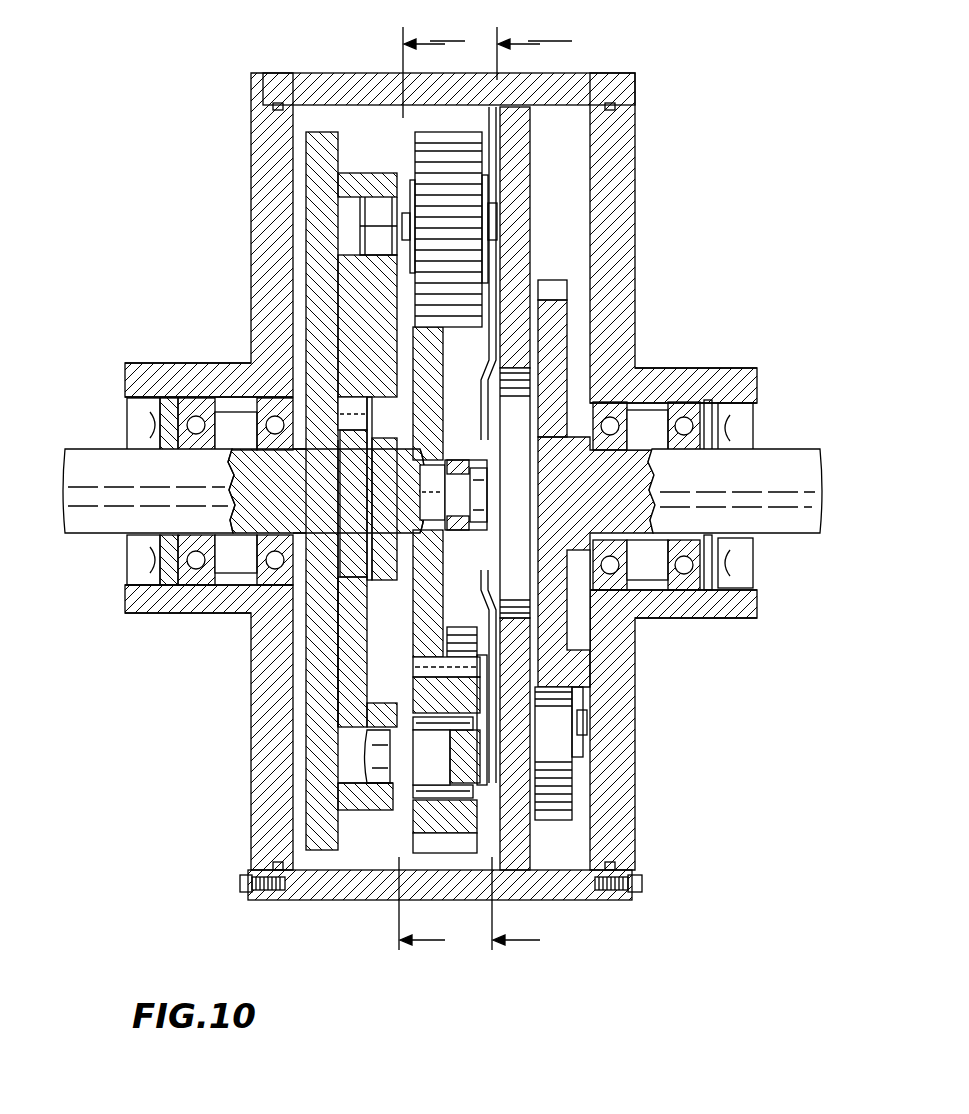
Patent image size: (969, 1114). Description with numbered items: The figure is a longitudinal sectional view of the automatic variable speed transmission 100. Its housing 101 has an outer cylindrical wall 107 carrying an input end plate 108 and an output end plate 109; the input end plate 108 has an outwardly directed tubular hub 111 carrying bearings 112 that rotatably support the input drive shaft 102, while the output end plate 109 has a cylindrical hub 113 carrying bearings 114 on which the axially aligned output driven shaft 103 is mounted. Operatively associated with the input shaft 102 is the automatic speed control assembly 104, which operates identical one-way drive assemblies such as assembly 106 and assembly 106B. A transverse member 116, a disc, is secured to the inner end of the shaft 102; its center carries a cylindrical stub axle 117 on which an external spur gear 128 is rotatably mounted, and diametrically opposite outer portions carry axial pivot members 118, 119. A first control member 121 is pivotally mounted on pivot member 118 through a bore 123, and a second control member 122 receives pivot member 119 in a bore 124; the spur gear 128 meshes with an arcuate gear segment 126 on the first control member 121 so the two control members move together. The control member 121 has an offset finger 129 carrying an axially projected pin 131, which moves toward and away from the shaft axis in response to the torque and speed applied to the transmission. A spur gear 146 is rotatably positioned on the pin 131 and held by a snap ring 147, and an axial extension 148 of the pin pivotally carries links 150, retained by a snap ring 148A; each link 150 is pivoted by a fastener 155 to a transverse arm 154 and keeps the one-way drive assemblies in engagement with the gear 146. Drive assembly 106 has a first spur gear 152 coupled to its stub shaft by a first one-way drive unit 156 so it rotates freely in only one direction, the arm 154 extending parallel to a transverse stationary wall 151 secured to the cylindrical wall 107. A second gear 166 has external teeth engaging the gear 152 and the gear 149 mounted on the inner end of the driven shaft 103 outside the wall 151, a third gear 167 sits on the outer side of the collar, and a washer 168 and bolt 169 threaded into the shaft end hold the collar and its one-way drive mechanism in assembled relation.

The automatic variable speed transmission 100 is at (454, 494).
The housing 101 is at (441, 461).
The input drive shaft 102 is at (105, 455).
The output driven shaft 103 is at (790, 465).
The automatic speed control assembly 104 is at (370, 125).
The one-way drive assembly 106 is at (440, 853).
The one-way drive assembly 106B is at (470, 130).
The outer cylindrical wall 107 is at (318, 74).
The input end plate 108 is at (258, 770).
The output end plate 109 is at (615, 250).
The tubular hub 111 is at (190, 372).
The bearings 112 is at (273, 447).
The cylindrical hub 113 is at (673, 370).
The bearings 114 is at (680, 537).
The transverse member 116 is at (330, 268).
The cylindrical stub axle 117 is at (247, 618).
The pivot member 118 is at (353, 763).
The pivot member 119 is at (355, 222).
The first control member 121 is at (338, 655).
The second control member 122 is at (365, 292).
The bore 123 is at (355, 795).
The bore 124 is at (377, 197).
The arcuate gear segment 126 is at (352, 643).
The external spur gear 128 is at (255, 638).
The offset finger 129 is at (386, 445).
The pin 131 is at (420, 483).
The spur gear 146 is at (430, 355).
The snap ring 147 is at (447, 532).
The axial extension 148 is at (491, 525).
The snap ring 148A is at (492, 510).
The gear 149 is at (557, 340).
The link 150 is at (482, 372).
The transverse stationary wall 151 is at (520, 168).
The first spur gear 152 is at (420, 688).
The transverse arm 154 is at (480, 667).
The fastener 155 is at (463, 755).
The first one-way drive unit 156 is at (433, 720).
The second gear 166 is at (470, 640).
The third gear 167 is at (623, 685).
The washer 168 is at (582, 730).
The bolt 169 is at (585, 735).